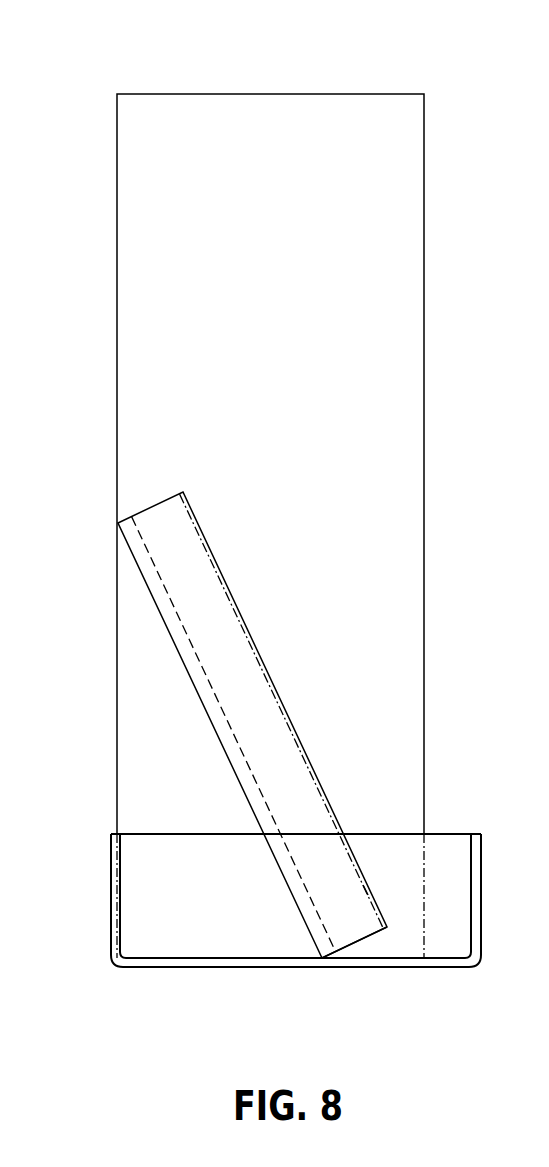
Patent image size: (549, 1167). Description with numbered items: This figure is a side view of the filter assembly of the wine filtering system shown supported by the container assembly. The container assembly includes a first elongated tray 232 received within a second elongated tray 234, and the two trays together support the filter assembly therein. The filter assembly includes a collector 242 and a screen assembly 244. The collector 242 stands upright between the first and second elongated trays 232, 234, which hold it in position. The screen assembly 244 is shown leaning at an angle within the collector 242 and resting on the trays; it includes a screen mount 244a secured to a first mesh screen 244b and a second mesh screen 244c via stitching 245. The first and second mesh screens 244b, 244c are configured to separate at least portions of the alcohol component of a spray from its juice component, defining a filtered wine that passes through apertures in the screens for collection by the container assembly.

The collector 242 is at (117, 127).
The first elongated tray 232 is at (122, 934).
The second elongated tray 234 is at (110, 893).
The screen assembly 244 is at (238, 755).
The screen mount 244a is at (372, 937).
The first mesh screen 244b is at (165, 594).
The second mesh screen 244c is at (260, 658).
The stitching 245 is at (365, 892).